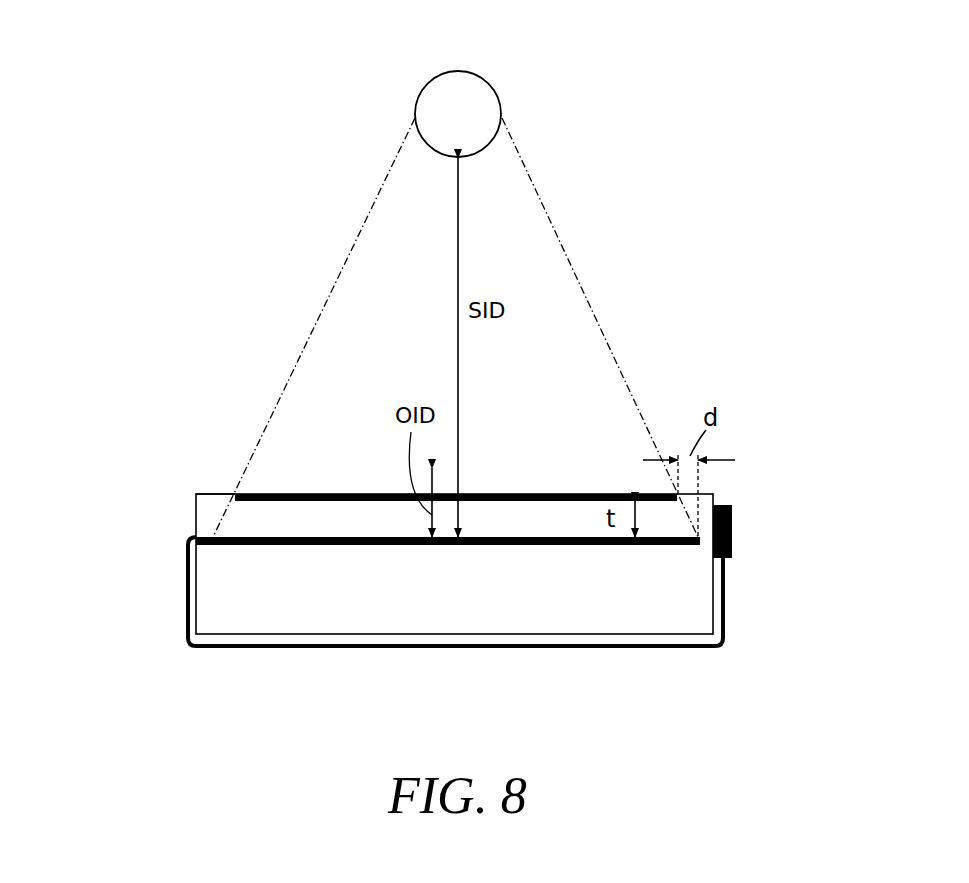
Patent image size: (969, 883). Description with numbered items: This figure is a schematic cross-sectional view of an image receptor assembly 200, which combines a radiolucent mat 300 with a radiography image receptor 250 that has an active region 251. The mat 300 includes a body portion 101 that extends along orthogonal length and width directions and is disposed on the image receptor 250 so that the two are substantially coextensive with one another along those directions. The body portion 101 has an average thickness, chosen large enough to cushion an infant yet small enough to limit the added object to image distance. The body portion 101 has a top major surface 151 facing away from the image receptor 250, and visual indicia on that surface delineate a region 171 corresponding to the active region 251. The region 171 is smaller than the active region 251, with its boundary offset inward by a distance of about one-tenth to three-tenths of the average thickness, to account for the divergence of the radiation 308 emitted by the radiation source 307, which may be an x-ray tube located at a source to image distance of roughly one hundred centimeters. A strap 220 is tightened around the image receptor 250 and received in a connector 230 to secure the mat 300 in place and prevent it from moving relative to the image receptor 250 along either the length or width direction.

The image receptor assembly 200 is at (217, 228).
The radiation source 307 is at (485, 103).
The radiation 308 is at (564, 247).
The radiolucent mat 300 is at (197, 494).
The top major surface 151 is at (224, 494).
The region of the top major surface 171 is at (324, 494).
The body portion 101 is at (548, 522).
The active region 251 is at (390, 546).
The connector 230 is at (733, 520).
The image receptor 250 is at (676, 613).
The strap 220 is at (480, 648).